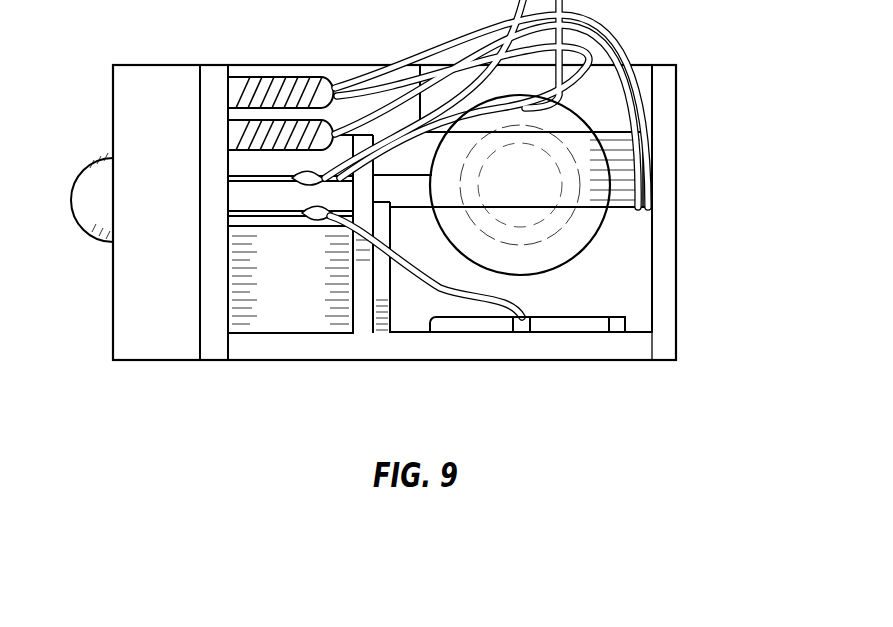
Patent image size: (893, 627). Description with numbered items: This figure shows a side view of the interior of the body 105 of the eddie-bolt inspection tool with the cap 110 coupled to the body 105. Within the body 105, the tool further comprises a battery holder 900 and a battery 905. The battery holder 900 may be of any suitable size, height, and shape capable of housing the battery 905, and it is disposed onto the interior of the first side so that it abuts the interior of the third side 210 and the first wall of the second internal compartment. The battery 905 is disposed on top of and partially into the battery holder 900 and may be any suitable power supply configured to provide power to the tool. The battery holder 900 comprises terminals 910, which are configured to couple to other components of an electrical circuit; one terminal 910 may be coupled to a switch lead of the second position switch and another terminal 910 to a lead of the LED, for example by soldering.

The body 105 is at (266, 406).
The cap 110 is at (118, 120).
The third side 210 is at (673, 175).
The battery 905 is at (560, 185).
The battery holder 900 is at (418, 325).
The terminals 910 is at (522, 332).